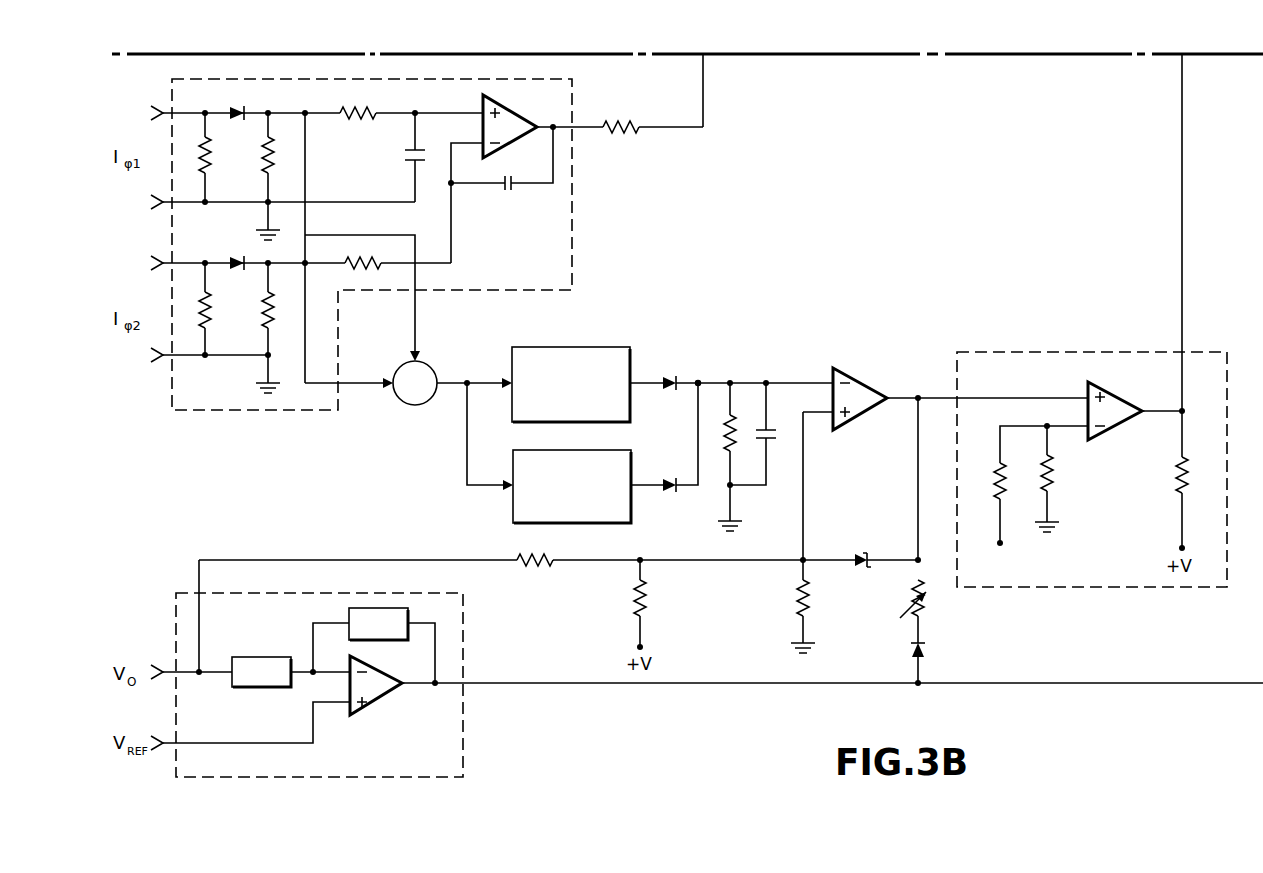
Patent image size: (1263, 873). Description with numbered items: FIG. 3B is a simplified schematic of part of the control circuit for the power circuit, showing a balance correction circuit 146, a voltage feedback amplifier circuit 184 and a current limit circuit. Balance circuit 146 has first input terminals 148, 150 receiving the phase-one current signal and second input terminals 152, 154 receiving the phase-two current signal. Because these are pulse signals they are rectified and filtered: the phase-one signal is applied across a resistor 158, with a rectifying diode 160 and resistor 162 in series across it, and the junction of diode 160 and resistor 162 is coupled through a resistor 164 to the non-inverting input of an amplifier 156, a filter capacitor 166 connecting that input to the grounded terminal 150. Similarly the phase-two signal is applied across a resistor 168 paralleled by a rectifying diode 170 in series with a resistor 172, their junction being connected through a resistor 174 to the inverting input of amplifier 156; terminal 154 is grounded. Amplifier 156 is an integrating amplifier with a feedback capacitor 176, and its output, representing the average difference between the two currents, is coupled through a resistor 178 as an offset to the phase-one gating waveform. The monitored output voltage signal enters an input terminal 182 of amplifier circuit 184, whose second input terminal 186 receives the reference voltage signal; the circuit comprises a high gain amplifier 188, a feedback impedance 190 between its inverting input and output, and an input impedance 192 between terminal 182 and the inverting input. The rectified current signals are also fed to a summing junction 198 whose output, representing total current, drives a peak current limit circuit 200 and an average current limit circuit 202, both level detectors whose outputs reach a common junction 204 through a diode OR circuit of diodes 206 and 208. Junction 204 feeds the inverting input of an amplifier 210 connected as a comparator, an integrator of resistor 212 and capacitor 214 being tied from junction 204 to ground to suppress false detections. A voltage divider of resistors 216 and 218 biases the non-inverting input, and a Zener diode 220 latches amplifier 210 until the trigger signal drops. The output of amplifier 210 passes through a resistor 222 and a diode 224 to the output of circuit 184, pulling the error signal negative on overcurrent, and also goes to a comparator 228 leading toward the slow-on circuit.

The balance correction circuit 146 is at (575, 93).
The first input terminal 148 is at (159, 113).
The first input terminal 150 is at (160, 204).
The second input terminal 152 is at (163, 267).
The second input terminal 154 is at (160, 362).
The amplifier 156 is at (529, 115).
The resistor 158 is at (212, 164).
The rectifying diode 160 is at (237, 108).
The resistor 162 is at (261, 153).
The resistor 164 is at (366, 106).
The filter capacitor 166 is at (403, 156).
The resistor 168 is at (240, 326).
The rectifying diode 170 is at (236, 257).
The resistor 172 is at (258, 308).
The resistor 174 is at (356, 250).
The feedback capacitor 176 is at (508, 194).
The resistor 178 is at (623, 134).
The input terminal 182 is at (162, 668).
The amplifier circuit 184 is at (464, 633).
The second input terminal 186 is at (162, 742).
The high gain amplifier 188 is at (382, 702).
The feedback impedance 190 is at (344, 610).
The input impedance 192 is at (279, 656).
The summing junction 198 is at (437, 364).
The peak current limit circuit 200 is at (605, 347).
The average current limit circuit 202 is at (632, 523).
The common junction 204 is at (704, 379).
The diode 206 is at (666, 376).
The diode 208 is at (670, 475).
The amplifier 210 is at (868, 382).
The resistor 212 is at (745, 425).
The capacitor 214 is at (781, 425).
The resistor 216 is at (655, 601).
The resistor 218 is at (813, 601).
The Zener diode 220 is at (870, 546).
The resistor 222 is at (890, 609).
The diode 224 is at (936, 654).
The comparator 228 is at (1086, 340).